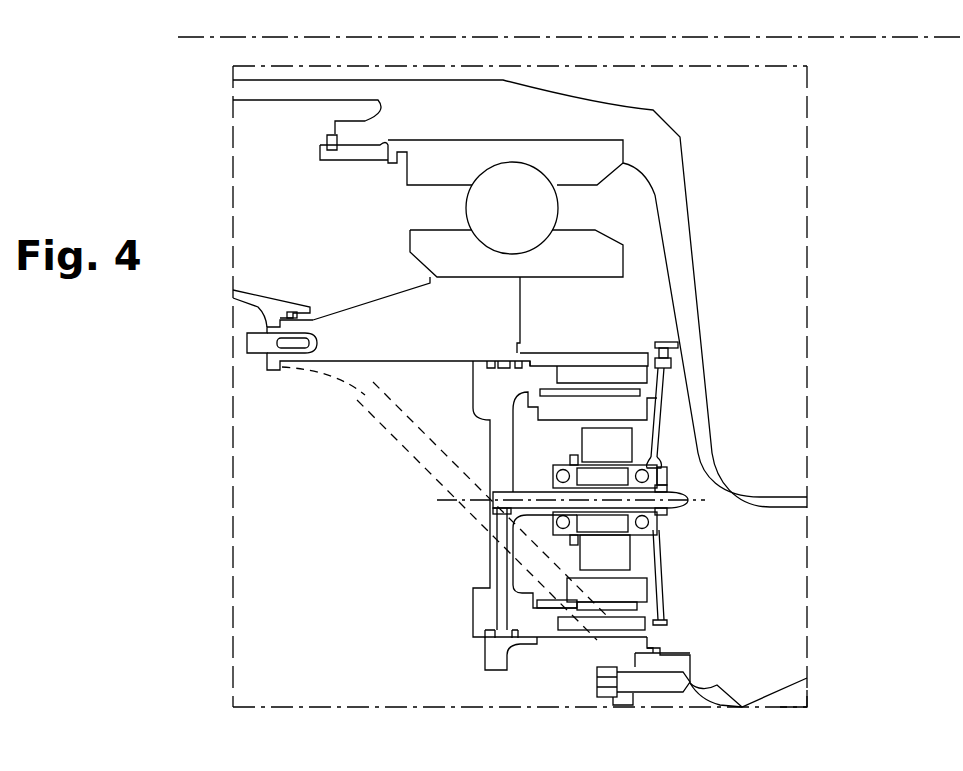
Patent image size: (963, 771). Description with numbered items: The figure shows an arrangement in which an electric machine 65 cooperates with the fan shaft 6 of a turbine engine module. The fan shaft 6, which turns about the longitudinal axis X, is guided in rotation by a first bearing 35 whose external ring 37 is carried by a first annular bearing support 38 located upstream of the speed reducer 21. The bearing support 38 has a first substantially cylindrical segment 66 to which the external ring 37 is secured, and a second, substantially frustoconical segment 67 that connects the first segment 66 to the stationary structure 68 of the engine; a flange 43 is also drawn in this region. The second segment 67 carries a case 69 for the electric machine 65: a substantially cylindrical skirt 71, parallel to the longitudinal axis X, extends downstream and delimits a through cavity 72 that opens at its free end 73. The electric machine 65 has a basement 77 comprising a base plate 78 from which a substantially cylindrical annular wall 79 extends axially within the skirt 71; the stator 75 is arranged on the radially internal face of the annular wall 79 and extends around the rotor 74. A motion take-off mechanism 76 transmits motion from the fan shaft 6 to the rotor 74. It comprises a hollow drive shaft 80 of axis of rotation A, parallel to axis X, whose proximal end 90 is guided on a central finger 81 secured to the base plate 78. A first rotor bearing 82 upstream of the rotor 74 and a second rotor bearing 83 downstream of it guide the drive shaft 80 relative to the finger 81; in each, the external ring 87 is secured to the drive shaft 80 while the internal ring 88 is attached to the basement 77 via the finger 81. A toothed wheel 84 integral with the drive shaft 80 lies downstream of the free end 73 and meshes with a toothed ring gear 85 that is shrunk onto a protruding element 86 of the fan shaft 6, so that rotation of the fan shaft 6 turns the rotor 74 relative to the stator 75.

The fan shaft 6 is at (344, 90).
The first bearing 35 is at (571, 148).
The external ring 37 is at (437, 253).
The speed reducer 21 is at (746, 254).
The flange 43 is at (247, 300).
The first segment 66 is at (398, 328).
The second segment 67 is at (376, 394).
The first annular bearing support 38 is at (368, 429).
The skirt 71 is at (620, 353).
The base plate 78 is at (479, 392).
The proximal end 90 is at (481, 594).
The stator 75 is at (653, 405).
The toothed wheel 84 is at (620, 442).
The through cavity 72 is at (546, 477).
The central finger 81 is at (662, 524).
The second rotor bearing 83 is at (666, 475).
The first rotor bearing 82 is at (492, 497).
The external ring 87 is at (503, 548).
The internal ring 88 is at (504, 522).
The rotor 74 is at (660, 452).
The toothed ring gear 85 is at (668, 362).
The protruding element 86 is at (667, 350).
The motion take-off mechanism 76 is at (686, 388).
The electric machine 65 is at (624, 541).
The drive shaft 80 is at (566, 656).
The basement 77 is at (468, 614).
The case 69 is at (466, 661).
The annular wall 79 is at (598, 628).
The free end 73 is at (648, 637).
The stationary structure 68 is at (682, 661).
The axis of rotation A is at (695, 500).
The longitudinal axis X is at (835, 47).